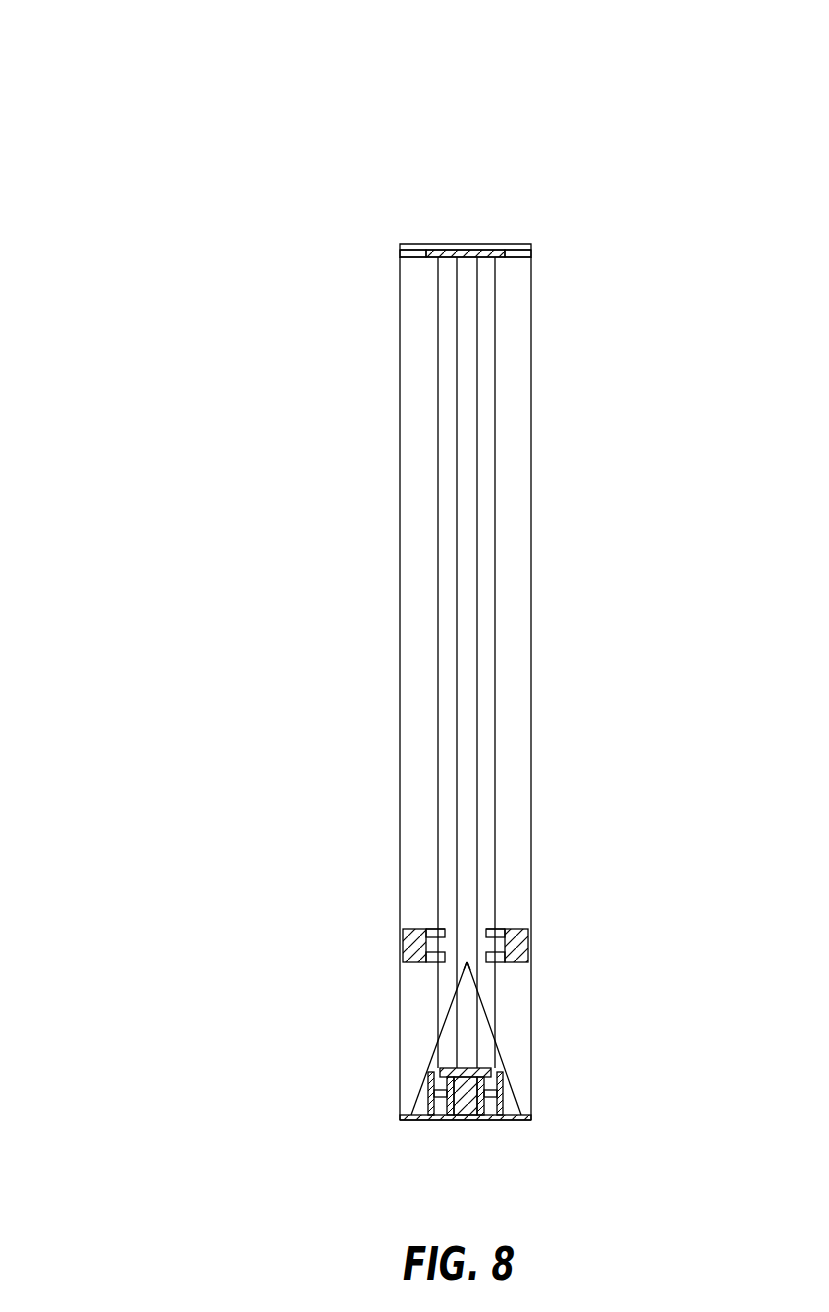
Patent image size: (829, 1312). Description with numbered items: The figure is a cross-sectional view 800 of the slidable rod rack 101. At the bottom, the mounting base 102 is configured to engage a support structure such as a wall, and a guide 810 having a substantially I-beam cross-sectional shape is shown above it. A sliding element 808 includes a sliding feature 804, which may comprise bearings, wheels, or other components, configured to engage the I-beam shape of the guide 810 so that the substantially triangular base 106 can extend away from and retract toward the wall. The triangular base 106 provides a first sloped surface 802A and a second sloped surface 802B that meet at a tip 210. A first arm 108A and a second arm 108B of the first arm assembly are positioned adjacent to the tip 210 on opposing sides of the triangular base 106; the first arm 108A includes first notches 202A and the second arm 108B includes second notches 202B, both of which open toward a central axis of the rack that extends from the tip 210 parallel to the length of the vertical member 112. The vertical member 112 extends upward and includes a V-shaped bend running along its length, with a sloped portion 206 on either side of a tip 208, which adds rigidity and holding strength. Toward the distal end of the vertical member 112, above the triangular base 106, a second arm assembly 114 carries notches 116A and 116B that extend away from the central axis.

The cross-sectional view 800 is at (105, 43).
The slidable rod rack 101 is at (634, 310).
The vertical member 112 is at (410, 332).
The second arm assembly 114 is at (467, 253).
The notch 116A is at (412, 253).
The notch 116B is at (520, 253).
The sloped portion 206 is at (447, 459).
The tip 208 is at (465, 478).
The tip of the triangular base 210 is at (467, 962).
The first notches 202A is at (437, 927).
The second notches 202B is at (493, 927).
The first arm 108A is at (405, 928).
The second arm 108B is at (527, 930).
The first sloped surface 802A is at (450, 1003).
The second sloped surface 802B is at (483, 1013).
The triangular base 106 is at (465, 1044).
The sliding feature 804 is at (445, 1083).
The sliding element 808 is at (503, 1108).
The guide 810 is at (467, 1110).
The mounting base 102 is at (430, 1118).